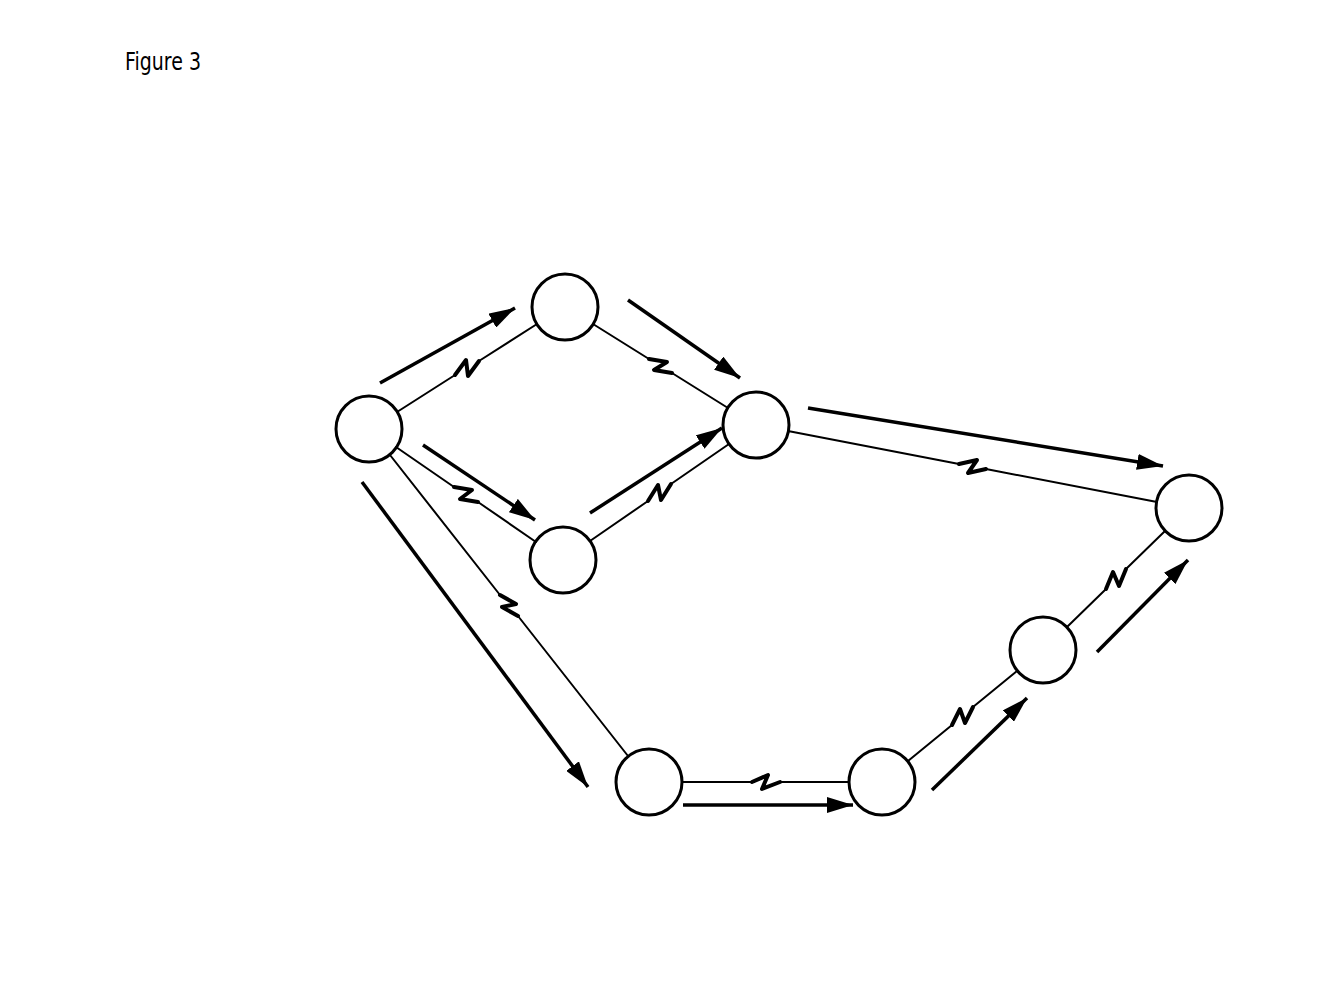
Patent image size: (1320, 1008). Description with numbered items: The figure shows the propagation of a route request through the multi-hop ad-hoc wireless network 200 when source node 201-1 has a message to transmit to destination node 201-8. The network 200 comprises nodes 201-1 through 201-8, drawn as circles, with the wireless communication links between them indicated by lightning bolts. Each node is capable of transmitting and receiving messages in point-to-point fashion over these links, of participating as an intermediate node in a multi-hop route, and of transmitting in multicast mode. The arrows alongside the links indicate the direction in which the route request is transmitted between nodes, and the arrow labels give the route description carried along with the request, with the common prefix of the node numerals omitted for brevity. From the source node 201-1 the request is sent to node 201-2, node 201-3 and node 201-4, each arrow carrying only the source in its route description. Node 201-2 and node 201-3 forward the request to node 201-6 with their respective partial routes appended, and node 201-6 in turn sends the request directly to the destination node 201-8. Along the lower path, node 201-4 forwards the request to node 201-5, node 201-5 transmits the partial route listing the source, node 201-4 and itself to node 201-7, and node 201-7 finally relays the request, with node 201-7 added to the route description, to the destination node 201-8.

The ad-hoc wireless network 200 is at (1015, 169).
The source node 201-1 is at (324, 412).
The node 201-2 is at (521, 291).
The node 201-3 is at (611, 578).
The node 201-4 is at (682, 760).
The node 201-5 is at (849, 760).
The node 201-6 is at (801, 442).
The node 201-7 is at (997, 633).
The destination node 201-8 is at (1234, 491).